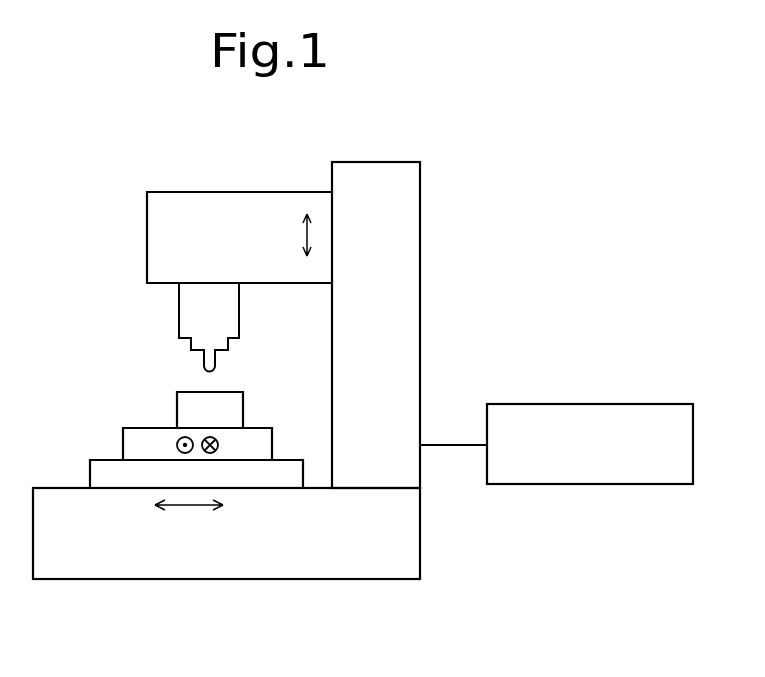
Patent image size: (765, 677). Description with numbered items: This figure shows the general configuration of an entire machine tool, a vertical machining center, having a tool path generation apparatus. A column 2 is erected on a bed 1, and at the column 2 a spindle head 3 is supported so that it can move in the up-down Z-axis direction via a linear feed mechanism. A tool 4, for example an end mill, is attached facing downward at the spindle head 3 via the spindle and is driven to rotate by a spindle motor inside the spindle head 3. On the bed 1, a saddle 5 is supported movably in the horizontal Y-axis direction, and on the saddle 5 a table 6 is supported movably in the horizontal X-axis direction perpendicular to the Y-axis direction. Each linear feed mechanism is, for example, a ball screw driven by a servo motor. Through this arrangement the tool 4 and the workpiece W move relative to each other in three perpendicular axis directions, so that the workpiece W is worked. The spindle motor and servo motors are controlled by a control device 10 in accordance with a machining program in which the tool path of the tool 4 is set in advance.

The bed 1 is at (165, 580).
The column 2 is at (420, 335).
The spindle head 3 is at (147, 226).
The tool 4 is at (203, 362).
The saddle 5 is at (90, 468).
The table 6 is at (123, 430).
The workpiece W is at (177, 400).
The control device 10 is at (570, 485).